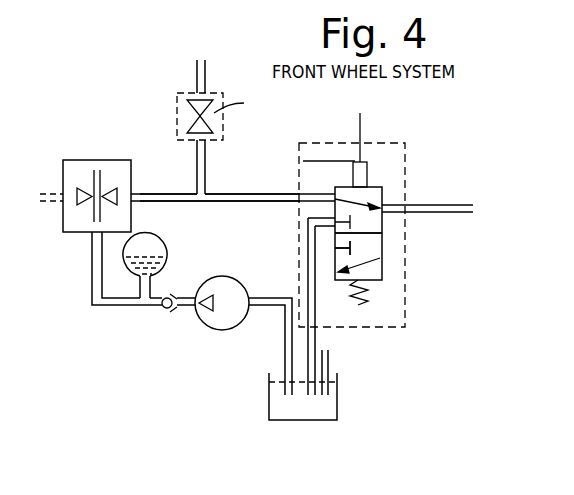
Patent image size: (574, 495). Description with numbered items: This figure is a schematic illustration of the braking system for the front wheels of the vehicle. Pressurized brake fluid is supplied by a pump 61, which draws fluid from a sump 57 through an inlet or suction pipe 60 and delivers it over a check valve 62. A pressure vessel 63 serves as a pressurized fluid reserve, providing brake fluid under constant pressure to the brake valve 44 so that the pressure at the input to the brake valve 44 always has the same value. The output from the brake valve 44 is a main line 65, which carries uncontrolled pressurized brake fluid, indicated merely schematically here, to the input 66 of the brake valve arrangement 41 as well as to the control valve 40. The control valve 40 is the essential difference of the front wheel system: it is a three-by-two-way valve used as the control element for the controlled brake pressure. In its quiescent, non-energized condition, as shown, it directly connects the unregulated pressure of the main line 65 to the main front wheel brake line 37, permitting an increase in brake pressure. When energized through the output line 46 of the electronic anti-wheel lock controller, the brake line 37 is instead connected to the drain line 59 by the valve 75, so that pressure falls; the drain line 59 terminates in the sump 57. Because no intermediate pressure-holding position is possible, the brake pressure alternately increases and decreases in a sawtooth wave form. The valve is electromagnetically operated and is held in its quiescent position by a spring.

The brake valve 44 is at (63, 161).
The brake valve arrangement 41 is at (182, 140).
The input 66 is at (205, 150).
The main line 65 is at (205, 202).
The control valve 40 is at (374, 231).
The valve 75 is at (384, 262).
The output line 46 is at (360, 115).
The main front wheel brake line 37 is at (445, 205).
The drain line 59 is at (316, 311).
The sump 57 is at (338, 386).
The suction pipe 60 is at (276, 320).
The pump 61 is at (213, 330).
The check valve 62 is at (166, 309).
The pressure vessel 63 is at (168, 258).